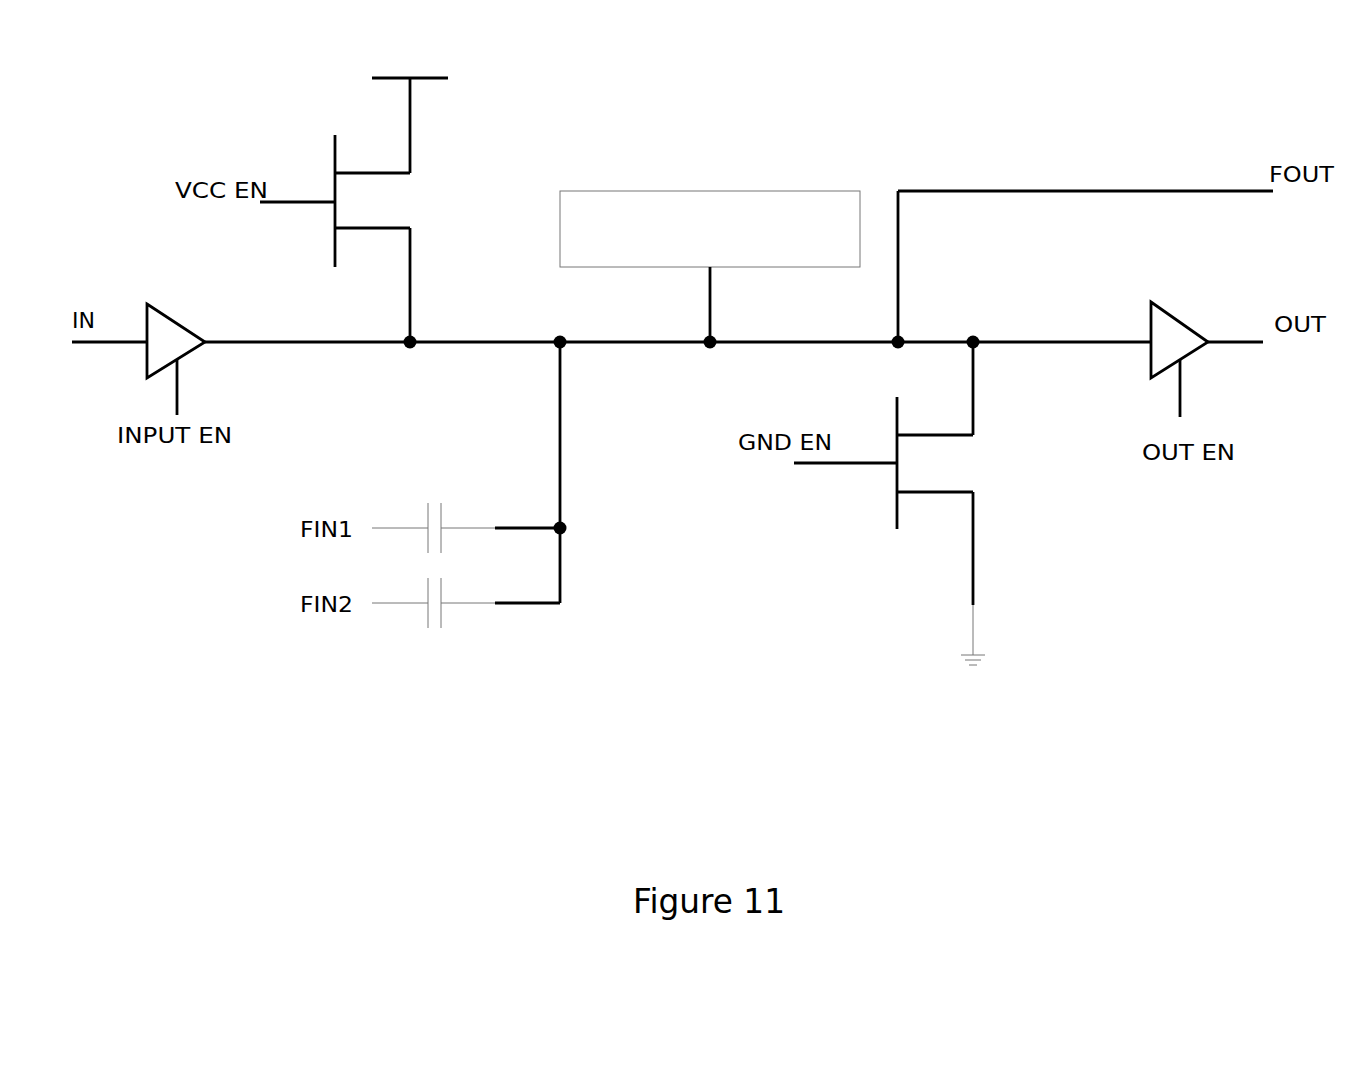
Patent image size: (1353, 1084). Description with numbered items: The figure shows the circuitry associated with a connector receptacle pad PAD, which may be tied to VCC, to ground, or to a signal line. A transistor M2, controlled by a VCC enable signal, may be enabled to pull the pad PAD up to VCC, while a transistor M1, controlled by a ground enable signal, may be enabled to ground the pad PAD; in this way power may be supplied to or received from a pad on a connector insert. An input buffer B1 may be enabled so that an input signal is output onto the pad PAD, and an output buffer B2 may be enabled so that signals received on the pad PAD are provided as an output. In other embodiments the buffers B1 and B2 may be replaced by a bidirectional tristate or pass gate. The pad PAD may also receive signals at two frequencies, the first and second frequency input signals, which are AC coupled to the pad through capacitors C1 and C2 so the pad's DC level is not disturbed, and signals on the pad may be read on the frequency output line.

The buffer B1 is at (186, 358).
The buffer B2 is at (1179, 354).
The transistor M1 is at (891, 503).
The transistor M2 is at (354, 210).
The coupling capacitor C1 is at (433, 507).
The coupling capacitor C2 is at (433, 621).
The connector receptacle pad PAD is at (710, 266).